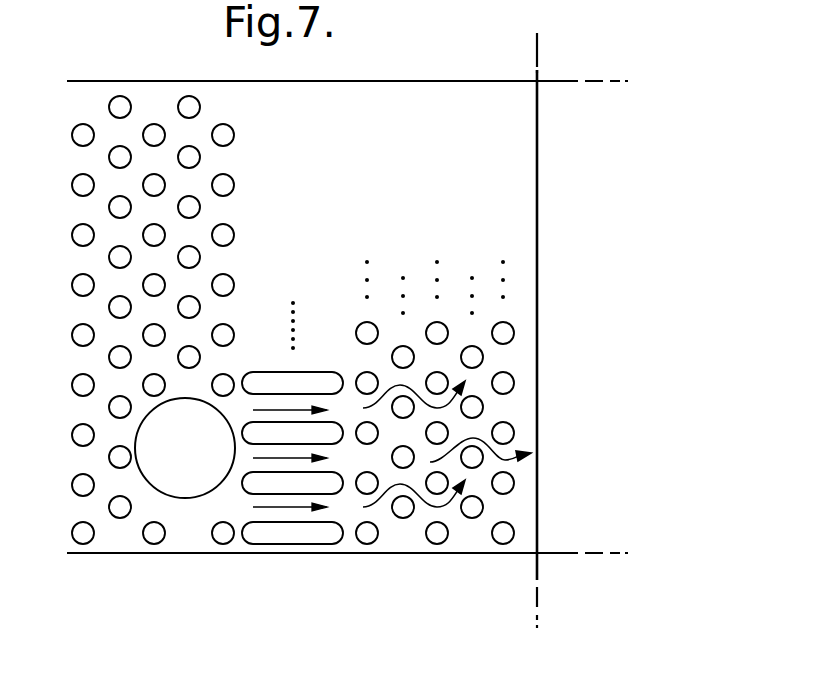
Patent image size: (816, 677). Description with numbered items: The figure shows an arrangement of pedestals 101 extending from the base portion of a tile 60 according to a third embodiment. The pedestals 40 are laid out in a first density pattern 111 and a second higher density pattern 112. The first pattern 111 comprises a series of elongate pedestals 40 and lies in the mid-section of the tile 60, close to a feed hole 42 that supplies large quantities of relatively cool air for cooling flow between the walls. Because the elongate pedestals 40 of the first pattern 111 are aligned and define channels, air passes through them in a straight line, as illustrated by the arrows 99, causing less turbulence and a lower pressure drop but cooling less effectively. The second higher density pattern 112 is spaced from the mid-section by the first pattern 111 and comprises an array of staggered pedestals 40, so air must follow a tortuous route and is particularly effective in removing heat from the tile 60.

The arrangement of pedestals 101 is at (331, 106).
The tile 60 is at (513, 155).
The pedestals 40 is at (509, 380).
The feed hole 42 is at (144, 496).
The arrows 99 is at (275, 460).
The first density pattern 111 is at (264, 328).
The second higher density pattern 112 is at (512, 406).